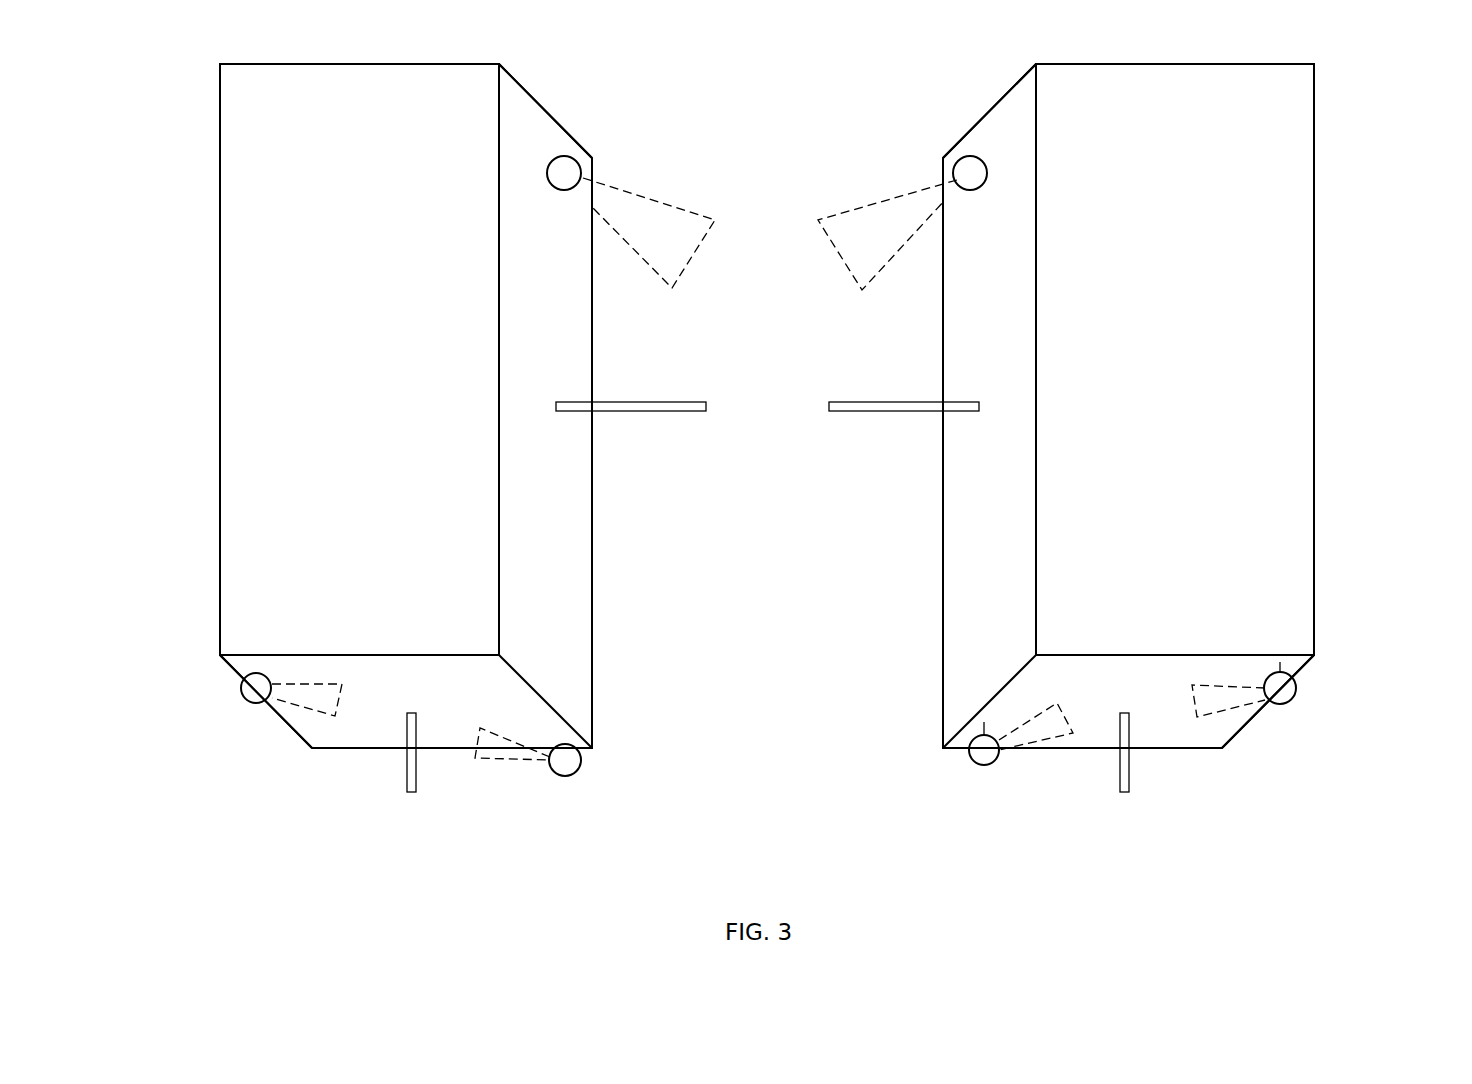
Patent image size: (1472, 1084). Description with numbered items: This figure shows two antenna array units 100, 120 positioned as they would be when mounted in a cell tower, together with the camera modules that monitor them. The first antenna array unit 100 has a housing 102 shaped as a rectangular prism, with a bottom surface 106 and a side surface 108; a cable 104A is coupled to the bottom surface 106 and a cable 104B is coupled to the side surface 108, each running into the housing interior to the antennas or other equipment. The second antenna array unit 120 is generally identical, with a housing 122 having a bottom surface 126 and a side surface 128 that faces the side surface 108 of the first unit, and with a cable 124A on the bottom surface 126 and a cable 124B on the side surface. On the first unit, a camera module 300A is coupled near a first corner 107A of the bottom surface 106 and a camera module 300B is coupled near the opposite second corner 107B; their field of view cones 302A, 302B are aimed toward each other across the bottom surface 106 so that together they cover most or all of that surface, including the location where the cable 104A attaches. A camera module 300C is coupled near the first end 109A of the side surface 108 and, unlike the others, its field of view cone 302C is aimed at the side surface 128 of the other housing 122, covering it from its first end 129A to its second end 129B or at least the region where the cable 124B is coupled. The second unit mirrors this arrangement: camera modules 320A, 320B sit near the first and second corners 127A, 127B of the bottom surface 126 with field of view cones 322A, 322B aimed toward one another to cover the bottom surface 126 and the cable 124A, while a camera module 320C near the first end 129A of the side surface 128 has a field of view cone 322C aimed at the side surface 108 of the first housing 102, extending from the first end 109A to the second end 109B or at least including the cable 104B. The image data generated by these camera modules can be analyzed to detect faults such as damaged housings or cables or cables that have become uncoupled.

The antenna array unit 100 is at (183, 135).
The housing 102 is at (240, 221).
The bottom surface 106 is at (415, 704).
The side surface 108 is at (568, 373).
The first end 109A is at (550, 112).
The second end 109B is at (527, 683).
The first corner 107A is at (218, 658).
The second corner 107B is at (593, 747).
The cable 104A is at (405, 777).
The cable 104B is at (648, 412).
The camera module 300A is at (242, 688).
The camera module 300B is at (567, 777).
The camera module 300C is at (582, 168).
The field of view cone 302A is at (305, 703).
The field of view cone 302B is at (490, 760).
The field of view cone 302C is at (642, 258).
The antenna array unit 120 is at (1353, 135).
The housing 122 is at (1296, 221).
The bottom surface 126 is at (1157, 704).
The side surface 128 is at (1005, 373).
The first end 129A is at (990, 112).
The second end 129B is at (1007, 683).
The first corner 127A is at (943, 748).
The second corner 127B is at (1318, 659).
The cable 124A is at (1130, 777).
The cable 124B is at (888, 412).
The camera module 320A is at (978, 765).
The camera module 320B is at (1297, 690).
The camera module 320C is at (952, 168).
The field of view cone 322A is at (1038, 745).
The field of view cone 322B is at (1235, 705).
The field of view cone 322C is at (892, 258).